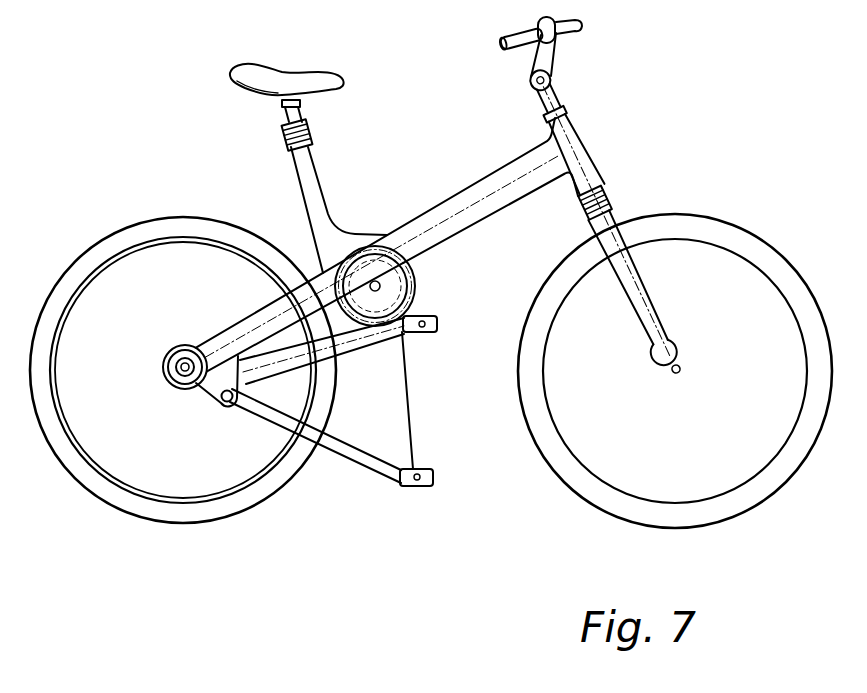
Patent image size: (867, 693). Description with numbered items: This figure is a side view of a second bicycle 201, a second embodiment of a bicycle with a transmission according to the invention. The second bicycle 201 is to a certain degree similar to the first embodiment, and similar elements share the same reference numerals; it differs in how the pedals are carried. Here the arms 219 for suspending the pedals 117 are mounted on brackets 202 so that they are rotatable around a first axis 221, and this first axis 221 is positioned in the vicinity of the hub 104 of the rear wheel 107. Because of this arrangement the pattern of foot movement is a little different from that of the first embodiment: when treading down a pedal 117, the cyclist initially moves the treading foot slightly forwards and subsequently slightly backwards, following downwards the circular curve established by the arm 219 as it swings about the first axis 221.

The second bicycle 201 is at (653, 146).
The rear wheel 107 is at (167, 231).
The hub 104 is at (169, 343).
The brackets 202 is at (200, 384).
The first axis 221 is at (228, 403).
The arms 219 is at (355, 349).
The pedals 117 is at (428, 322).